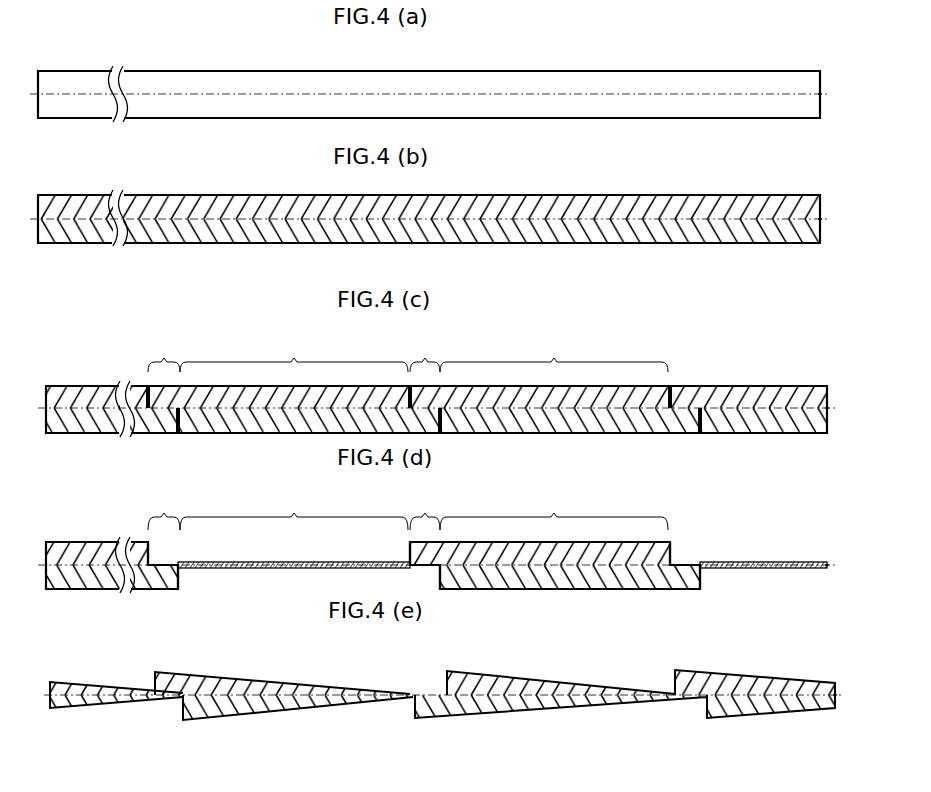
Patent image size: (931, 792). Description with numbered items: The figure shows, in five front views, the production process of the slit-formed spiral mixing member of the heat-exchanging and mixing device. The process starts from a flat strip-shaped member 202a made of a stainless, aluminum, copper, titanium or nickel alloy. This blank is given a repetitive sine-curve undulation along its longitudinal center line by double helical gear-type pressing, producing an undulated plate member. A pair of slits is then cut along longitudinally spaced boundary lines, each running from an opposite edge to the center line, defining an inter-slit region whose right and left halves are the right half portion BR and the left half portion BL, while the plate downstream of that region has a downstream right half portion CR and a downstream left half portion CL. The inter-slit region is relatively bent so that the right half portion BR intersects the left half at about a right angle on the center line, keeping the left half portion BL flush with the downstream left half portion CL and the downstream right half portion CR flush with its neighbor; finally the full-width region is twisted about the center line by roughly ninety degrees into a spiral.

The strip-shaped member 202a is at (513, 57).
The left half portion of the inter-slit region BL is at (172, 673).
The downstream left half portion CL is at (213, 672).
The downstream right half portion CR is at (195, 718).
The right half portion of the inter-slit region BR is at (427, 720).